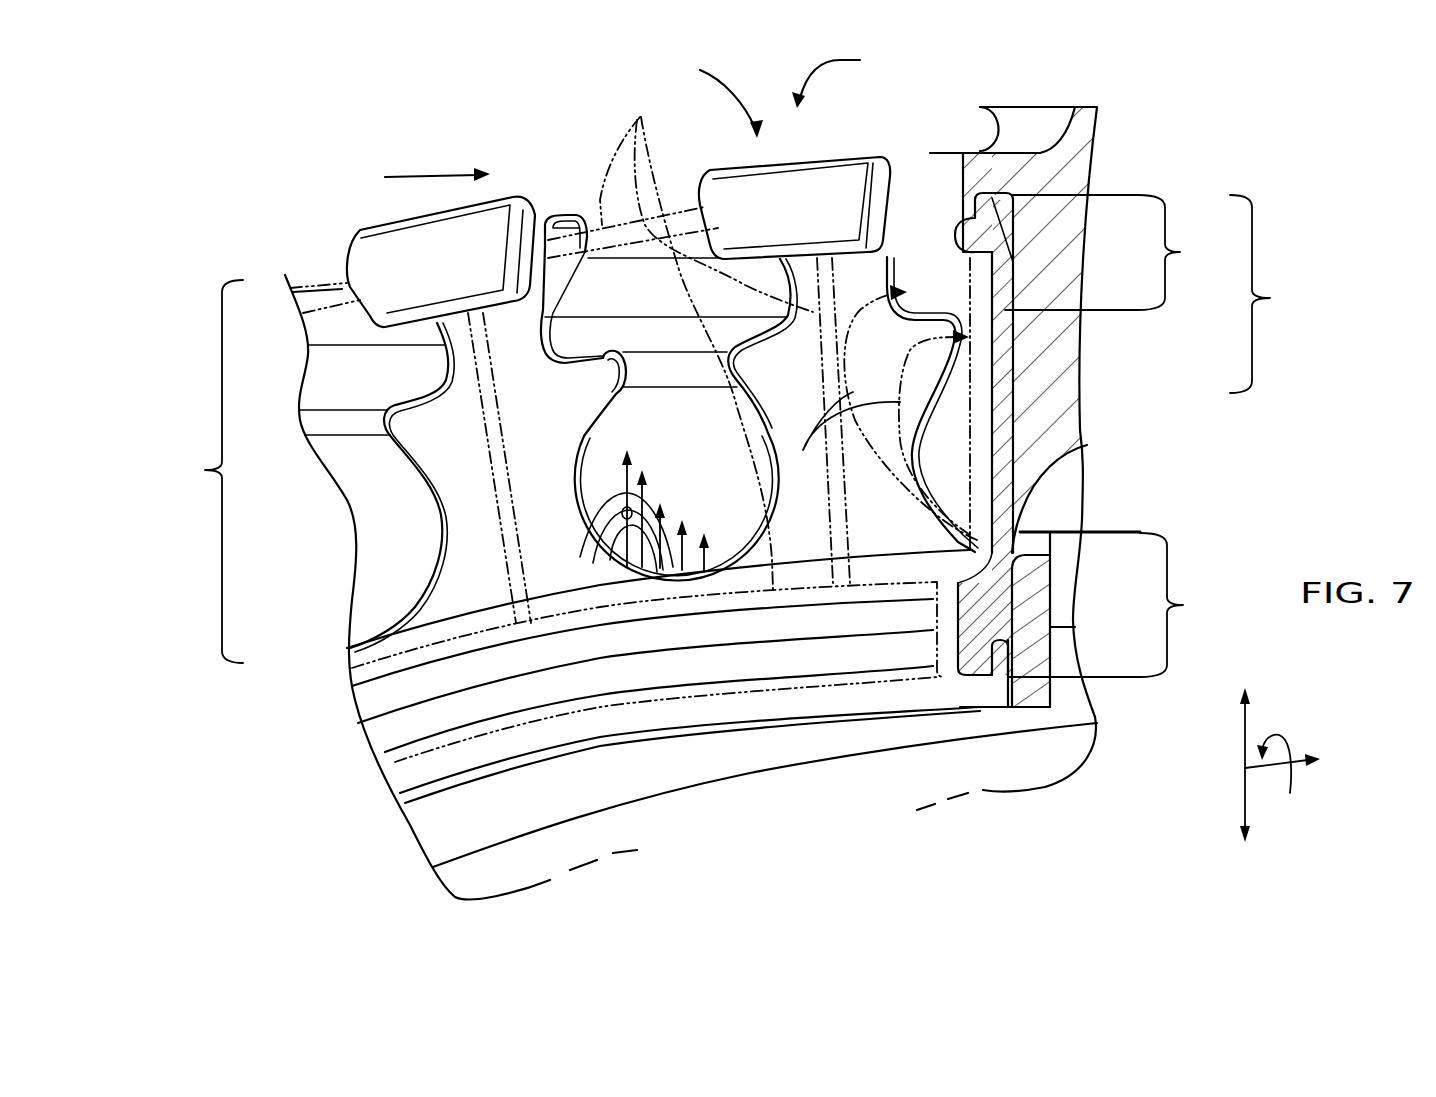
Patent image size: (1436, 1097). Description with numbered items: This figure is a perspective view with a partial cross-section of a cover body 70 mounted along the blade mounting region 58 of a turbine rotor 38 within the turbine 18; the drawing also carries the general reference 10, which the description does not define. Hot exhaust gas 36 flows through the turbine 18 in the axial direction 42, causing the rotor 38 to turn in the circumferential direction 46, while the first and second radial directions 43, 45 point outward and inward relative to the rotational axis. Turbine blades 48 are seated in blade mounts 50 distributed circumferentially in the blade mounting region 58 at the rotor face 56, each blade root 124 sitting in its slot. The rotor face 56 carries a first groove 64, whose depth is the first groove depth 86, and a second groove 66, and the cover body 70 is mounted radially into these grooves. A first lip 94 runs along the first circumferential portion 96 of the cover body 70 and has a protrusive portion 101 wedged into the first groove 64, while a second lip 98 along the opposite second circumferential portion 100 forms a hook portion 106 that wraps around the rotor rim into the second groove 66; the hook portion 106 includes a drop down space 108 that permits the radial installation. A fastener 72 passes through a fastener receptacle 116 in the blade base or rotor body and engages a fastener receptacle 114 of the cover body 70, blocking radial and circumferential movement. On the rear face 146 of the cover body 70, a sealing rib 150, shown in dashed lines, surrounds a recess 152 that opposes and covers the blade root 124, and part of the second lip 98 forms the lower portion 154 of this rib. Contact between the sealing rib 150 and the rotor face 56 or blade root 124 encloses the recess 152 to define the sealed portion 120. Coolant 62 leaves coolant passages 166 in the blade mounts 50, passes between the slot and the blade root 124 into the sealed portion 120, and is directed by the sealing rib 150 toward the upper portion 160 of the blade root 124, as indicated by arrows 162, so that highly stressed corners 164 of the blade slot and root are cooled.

The seal assembly 10 is at (841, 76).
The turbine 18 is at (777, 152).
The exhaust gas 36 is at (433, 172).
The turbine rotor 38 is at (1040, 697).
The axial direction 42 is at (1297, 770).
The first radial direction 43 is at (1247, 733).
The second radial direction 45 is at (1247, 807).
The circumferential direction 46 is at (1288, 750).
The turbine blade 48 is at (1040, 117).
The turbine blade mount 50 is at (747, 537).
The rotor face 56 is at (923, 697).
The blade mounting region 58 is at (402, 548).
The coolant 62 is at (655, 550).
The first groove 64 is at (1013, 195).
The second groove 66 is at (1012, 660).
The cover body 70 is at (1013, 418).
The fastener 72 is at (955, 252).
The first groove depth 86 is at (980, 637).
The first lip 94 is at (1013, 223).
The first circumferential portion 96 is at (1114, 252).
The second lip 98 is at (963, 575).
The second circumferential portion 100 is at (1128, 604).
The protrusive portion 101 is at (997, 195).
The hook portion 106 is at (977, 680).
The drop down space 108 is at (980, 614).
The fastener receptacle 114 is at (975, 200).
The fastener receptacle 116 is at (967, 220).
The sealed portion 120 is at (1013, 348).
The turbine blade root 124 is at (1070, 427).
The rear face 146 is at (1013, 330).
The sealing rib 150 is at (680, 333).
The recess 152 is at (1013, 372).
The lower portion 154 is at (1028, 515).
The upper portion 160 is at (1276, 294).
The arrows 162 is at (878, 412).
The corners 164 is at (627, 358).
The coolant passages 166 is at (653, 510).